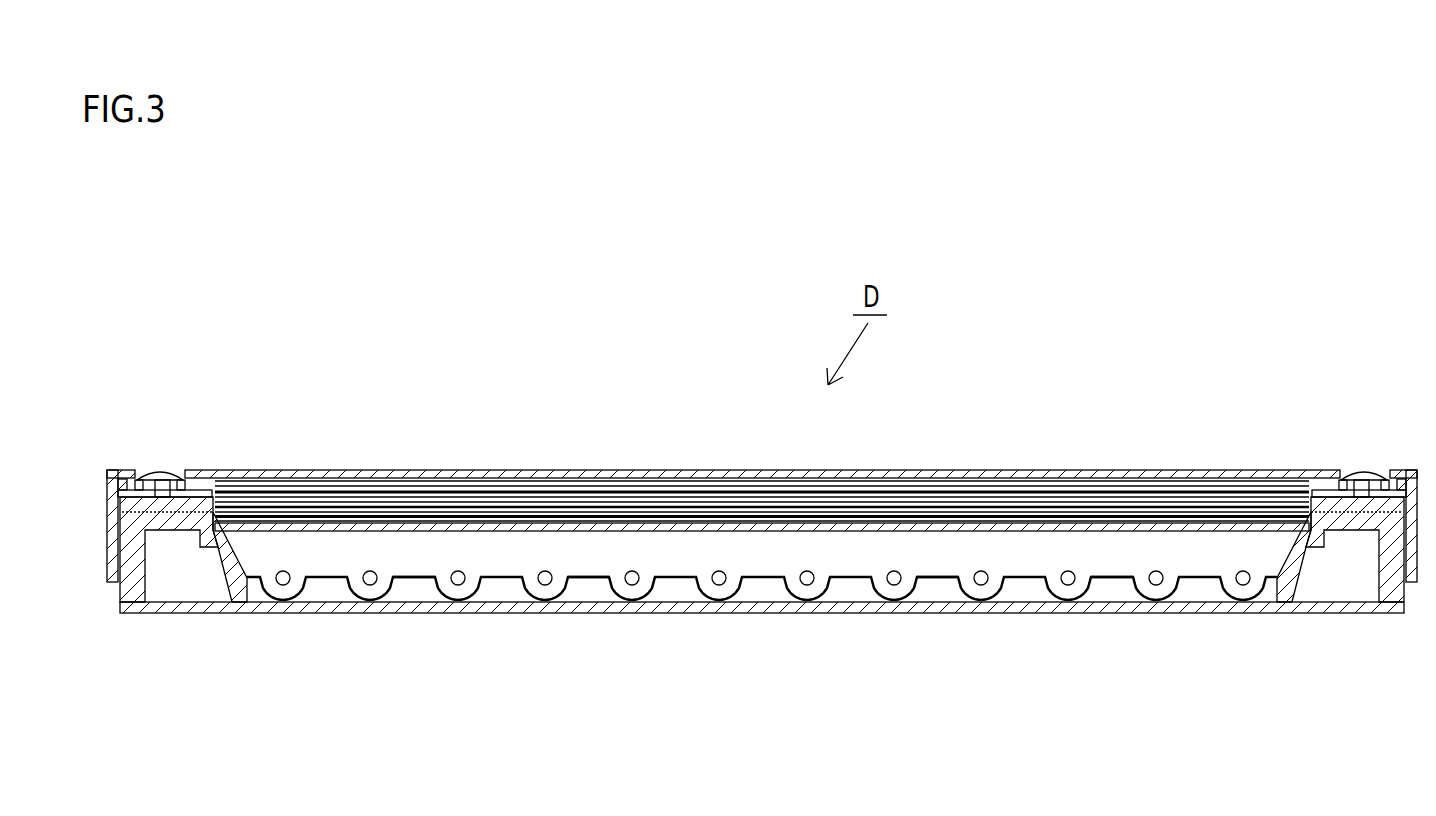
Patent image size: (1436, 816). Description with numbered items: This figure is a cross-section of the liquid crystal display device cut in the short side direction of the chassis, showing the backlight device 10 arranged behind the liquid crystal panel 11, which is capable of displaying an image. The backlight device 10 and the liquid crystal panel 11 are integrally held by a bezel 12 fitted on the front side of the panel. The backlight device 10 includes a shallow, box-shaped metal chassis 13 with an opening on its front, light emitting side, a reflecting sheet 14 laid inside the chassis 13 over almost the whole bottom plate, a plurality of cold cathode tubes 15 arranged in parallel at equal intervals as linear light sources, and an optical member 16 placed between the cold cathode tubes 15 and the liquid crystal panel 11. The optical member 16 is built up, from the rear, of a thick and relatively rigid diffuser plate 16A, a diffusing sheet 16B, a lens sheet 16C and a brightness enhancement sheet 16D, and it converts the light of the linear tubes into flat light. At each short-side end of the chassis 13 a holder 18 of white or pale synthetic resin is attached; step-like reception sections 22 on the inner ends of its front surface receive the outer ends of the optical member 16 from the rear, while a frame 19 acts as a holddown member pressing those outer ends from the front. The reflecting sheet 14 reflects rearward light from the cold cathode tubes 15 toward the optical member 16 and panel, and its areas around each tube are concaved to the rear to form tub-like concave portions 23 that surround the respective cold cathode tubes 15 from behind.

The backlight device 10 is at (364, 679).
The liquid crystal panel 11 is at (392, 472).
The bezel 12 is at (228, 473).
The chassis 13 is at (682, 607).
The reflecting sheet 14 is at (415, 578).
The cold cathode tube 15 is at (1156, 571).
The optical member 16 is at (722, 350).
The diffuser plate 16A is at (650, 523).
The diffusing sheet 16B is at (613, 517).
The lens sheet 16C is at (576, 511).
The brightness enhancement sheet 16D is at (525, 518).
The holder 18 is at (162, 512).
The frame 19 is at (237, 505).
The reception section 22 is at (215, 512).
The concave portion 23 is at (437, 590).